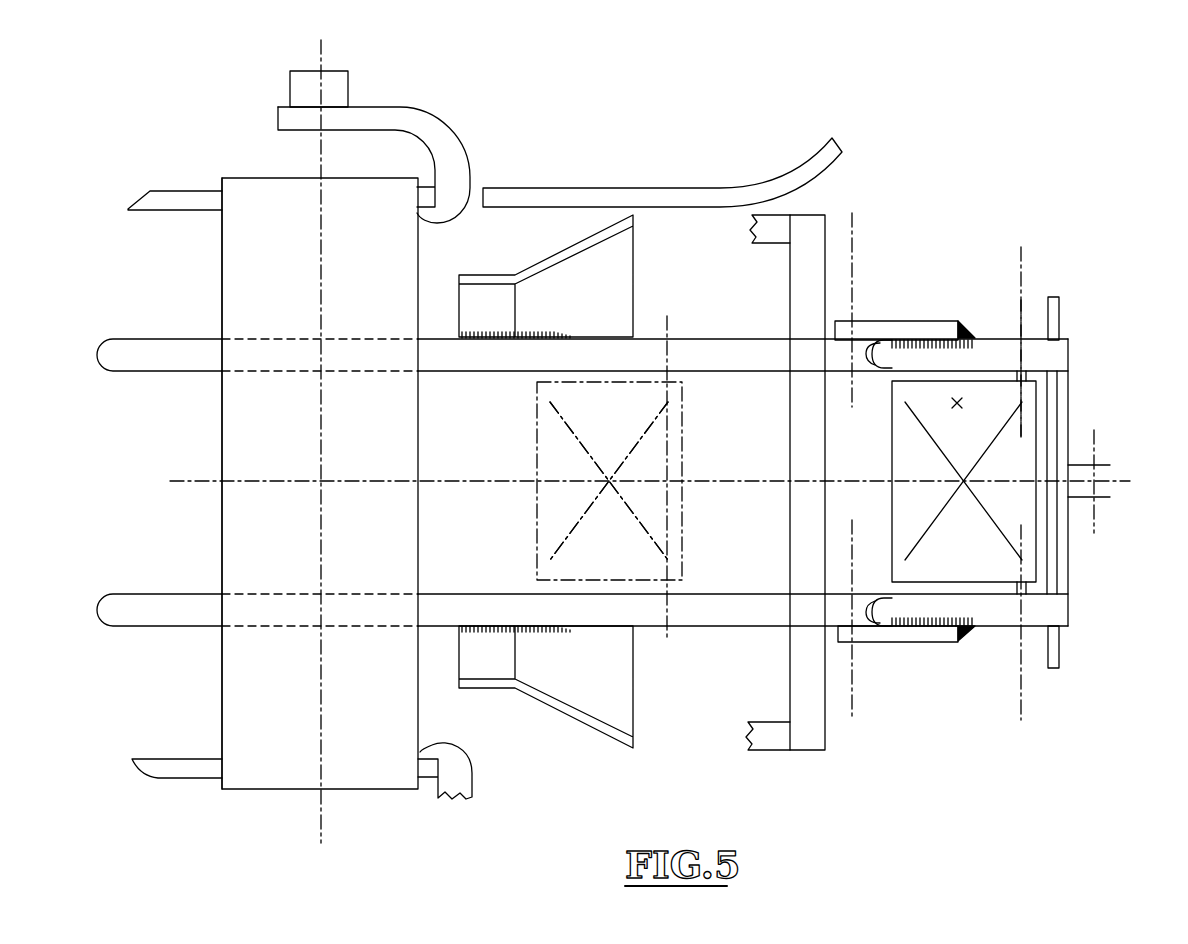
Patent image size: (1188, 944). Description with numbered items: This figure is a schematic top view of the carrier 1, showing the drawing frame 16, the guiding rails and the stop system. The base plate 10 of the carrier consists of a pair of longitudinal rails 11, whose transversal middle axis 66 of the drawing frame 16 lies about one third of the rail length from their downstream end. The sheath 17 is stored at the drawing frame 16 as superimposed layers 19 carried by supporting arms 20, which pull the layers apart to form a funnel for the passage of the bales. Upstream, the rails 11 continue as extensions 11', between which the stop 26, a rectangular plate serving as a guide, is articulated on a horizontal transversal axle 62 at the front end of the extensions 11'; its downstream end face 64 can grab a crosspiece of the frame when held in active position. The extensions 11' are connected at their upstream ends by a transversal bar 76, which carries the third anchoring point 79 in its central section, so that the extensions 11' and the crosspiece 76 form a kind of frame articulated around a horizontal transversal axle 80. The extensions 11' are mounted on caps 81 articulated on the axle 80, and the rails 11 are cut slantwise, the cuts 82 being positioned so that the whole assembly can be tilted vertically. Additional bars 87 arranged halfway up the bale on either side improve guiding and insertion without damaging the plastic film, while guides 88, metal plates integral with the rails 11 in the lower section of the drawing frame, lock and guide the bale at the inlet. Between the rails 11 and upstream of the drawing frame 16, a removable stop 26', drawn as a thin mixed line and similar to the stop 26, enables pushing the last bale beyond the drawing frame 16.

The carrier 1 is at (815, 230).
The base plate 10 is at (490, 380).
The rails 11 is at (726, 483).
The upstream extensions of the rails 11' is at (1052, 483).
The drawing frame 16 is at (462, 102).
The sheath 17 is at (190, 248).
The superimposed layers 19 is at (188, 483).
The supporting arms 20 is at (150, 194).
The stop 26 is at (972, 350).
The removable stop 26' is at (645, 546).
The horizontal transversal axle 62 is at (1020, 247).
The downstream end face 64 is at (1055, 326).
The transversal middle axis 66 is at (322, 840).
The transversal bar 76 is at (1060, 417).
The third point 79 is at (1097, 499).
The axle 80 is at (853, 708).
The caps 81 is at (918, 328).
The cuts 82 is at (877, 342).
The additional bars 87 is at (778, 178).
The guides 88 is at (620, 292).